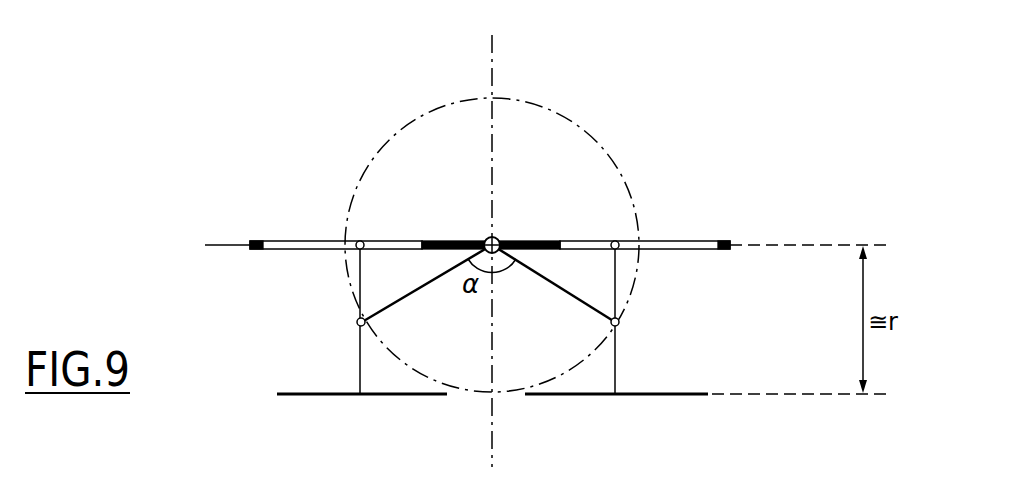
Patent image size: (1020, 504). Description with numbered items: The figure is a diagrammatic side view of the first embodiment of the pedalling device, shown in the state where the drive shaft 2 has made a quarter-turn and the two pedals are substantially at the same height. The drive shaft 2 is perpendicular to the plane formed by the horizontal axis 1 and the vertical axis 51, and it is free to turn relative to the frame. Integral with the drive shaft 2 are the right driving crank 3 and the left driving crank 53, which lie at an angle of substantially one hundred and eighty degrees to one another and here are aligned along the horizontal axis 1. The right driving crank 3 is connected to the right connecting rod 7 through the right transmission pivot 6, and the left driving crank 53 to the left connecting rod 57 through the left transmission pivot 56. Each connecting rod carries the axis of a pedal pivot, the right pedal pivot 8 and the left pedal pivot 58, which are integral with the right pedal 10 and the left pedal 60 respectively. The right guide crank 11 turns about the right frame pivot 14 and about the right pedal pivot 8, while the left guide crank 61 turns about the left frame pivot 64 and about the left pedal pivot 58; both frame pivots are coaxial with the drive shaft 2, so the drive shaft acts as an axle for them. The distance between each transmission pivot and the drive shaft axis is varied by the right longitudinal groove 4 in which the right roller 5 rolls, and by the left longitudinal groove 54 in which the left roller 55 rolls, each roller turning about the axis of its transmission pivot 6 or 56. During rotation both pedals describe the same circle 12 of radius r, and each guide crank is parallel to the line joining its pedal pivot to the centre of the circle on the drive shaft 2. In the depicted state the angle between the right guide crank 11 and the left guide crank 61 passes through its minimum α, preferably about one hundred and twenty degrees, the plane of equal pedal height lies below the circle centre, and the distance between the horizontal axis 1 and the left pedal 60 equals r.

The horizontal axis 1 is at (780, 240).
The drive shaft 2 is at (500, 238).
The right driving crank 3 is at (546, 238).
The right longitudinal groove 4 is at (672, 252).
The right roller 5 is at (655, 194).
The right transmission pivot 6 is at (617, 238).
The right connecting rod 7 is at (624, 283).
The right pedal pivot 8 is at (628, 328).
The right pedal 10 is at (645, 398).
The right guide crank 11 is at (550, 285).
The circle 12 is at (578, 122).
The right frame pivot 14 is at (518, 194).
The vertical axis 51 is at (488, 53).
The left driving crank 53 is at (462, 236).
The left longitudinal groove 54 is at (321, 239).
The left roller 55 is at (311, 180).
The left transmission pivot 56 is at (358, 237).
The left connecting rod 57 is at (354, 283).
The left pedal pivot 58 is at (354, 324).
The left pedal 60 is at (332, 403).
The left guide crank 61 is at (425, 286).
The left frame pivot 64 is at (518, 194).